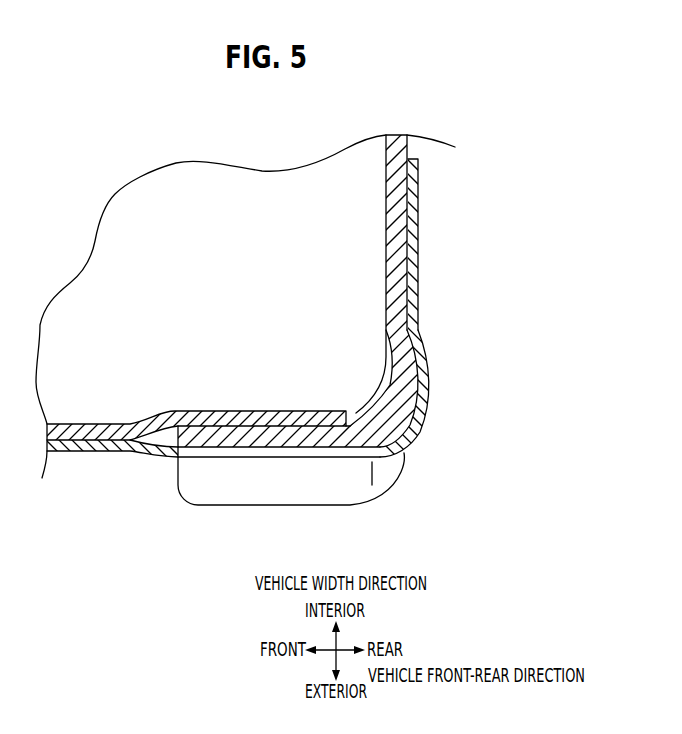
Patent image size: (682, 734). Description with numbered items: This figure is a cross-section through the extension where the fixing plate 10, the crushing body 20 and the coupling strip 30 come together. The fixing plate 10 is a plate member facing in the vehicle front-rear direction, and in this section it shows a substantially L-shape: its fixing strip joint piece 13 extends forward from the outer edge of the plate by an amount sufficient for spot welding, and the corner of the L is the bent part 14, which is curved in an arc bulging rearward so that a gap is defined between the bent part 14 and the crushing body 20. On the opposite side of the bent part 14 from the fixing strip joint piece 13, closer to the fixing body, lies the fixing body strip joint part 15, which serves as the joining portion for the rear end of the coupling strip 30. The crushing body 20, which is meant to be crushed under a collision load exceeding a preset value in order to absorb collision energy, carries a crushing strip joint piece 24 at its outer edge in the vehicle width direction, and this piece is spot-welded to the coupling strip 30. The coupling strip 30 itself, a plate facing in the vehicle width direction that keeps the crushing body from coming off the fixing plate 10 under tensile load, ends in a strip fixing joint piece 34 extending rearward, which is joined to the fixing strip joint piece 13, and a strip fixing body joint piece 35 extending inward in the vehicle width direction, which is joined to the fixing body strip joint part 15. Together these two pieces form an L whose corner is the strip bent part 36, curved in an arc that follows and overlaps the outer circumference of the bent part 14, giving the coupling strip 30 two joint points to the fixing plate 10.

The fixing plate 10 is at (386, 169).
The fixing strip joint piece 13 is at (215, 437).
The bent part 14 is at (411, 368).
The fixing body strip joint part 15 is at (393, 226).
The crushing body 20 is at (80, 425).
The crushing strip joint piece 24 is at (283, 427).
The coupling strip 30 is at (85, 452).
The strip fixing joint piece 34 is at (270, 452).
The strip fixing body joint piece 35 is at (412, 232).
The strip bent part 36 is at (421, 412).